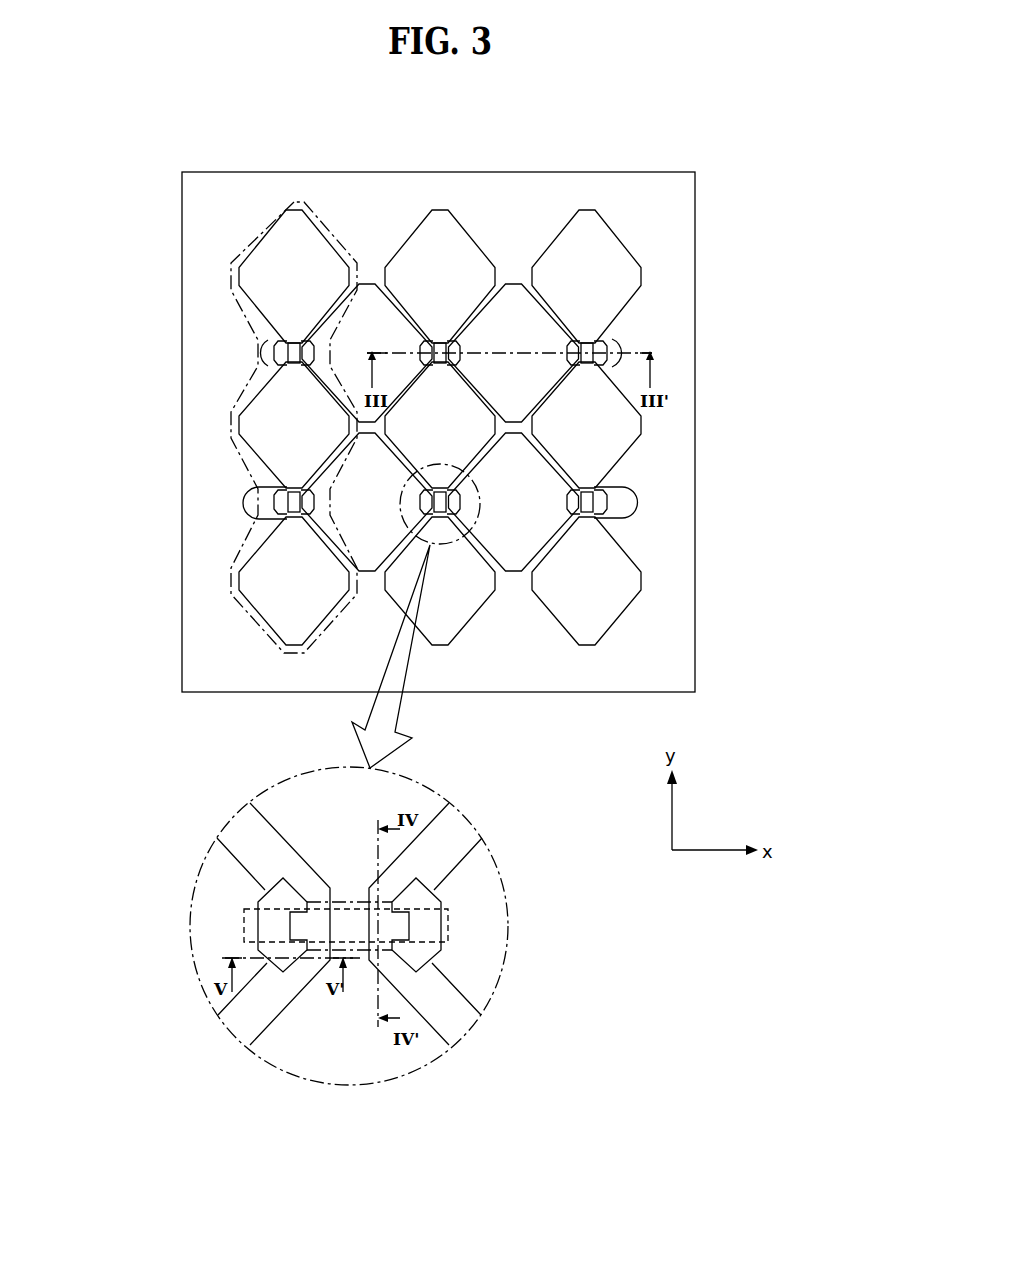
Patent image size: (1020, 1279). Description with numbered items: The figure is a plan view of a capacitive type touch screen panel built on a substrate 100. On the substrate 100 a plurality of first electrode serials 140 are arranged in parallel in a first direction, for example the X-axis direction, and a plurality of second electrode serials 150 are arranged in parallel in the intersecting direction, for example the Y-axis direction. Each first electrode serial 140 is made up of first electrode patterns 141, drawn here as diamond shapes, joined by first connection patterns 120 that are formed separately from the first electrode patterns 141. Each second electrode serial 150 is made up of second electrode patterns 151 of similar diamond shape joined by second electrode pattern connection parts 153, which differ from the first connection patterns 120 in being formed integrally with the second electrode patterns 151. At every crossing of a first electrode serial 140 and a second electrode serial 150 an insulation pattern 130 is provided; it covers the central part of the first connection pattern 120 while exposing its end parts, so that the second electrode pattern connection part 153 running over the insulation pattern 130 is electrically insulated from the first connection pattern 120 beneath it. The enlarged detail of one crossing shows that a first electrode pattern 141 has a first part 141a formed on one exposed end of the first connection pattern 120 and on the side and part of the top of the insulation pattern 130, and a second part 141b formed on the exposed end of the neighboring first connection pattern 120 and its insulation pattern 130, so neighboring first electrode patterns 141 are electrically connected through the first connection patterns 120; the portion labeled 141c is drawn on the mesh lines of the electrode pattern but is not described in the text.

The substrate 100 is at (200, 647).
The first connection pattern 120 is at (448, 919).
The insulation pattern 130 is at (276, 488).
The first electrode serial 140 is at (638, 503).
The first electrode pattern 141 is at (357, 473).
The first part of the first electrode pattern 141a is at (422, 930).
The second part of the first electrode pattern 141b is at (272, 922).
The mesh line 141c is at (190, 930).
The second electrode serial 150 is at (255, 238).
The second electrode pattern 151 is at (294, 212).
The second electrode pattern connection part 153 is at (290, 348).